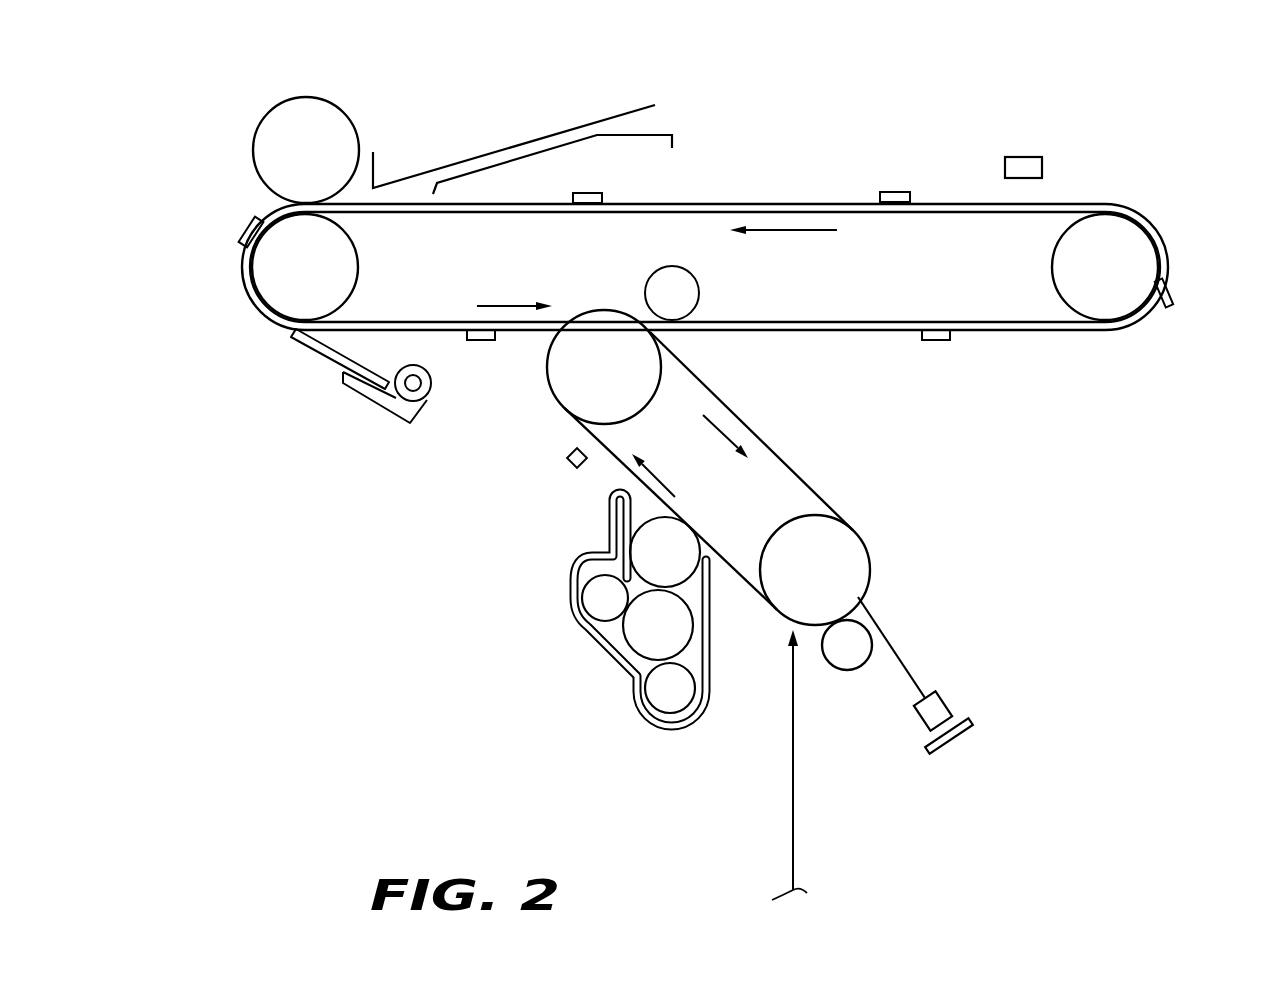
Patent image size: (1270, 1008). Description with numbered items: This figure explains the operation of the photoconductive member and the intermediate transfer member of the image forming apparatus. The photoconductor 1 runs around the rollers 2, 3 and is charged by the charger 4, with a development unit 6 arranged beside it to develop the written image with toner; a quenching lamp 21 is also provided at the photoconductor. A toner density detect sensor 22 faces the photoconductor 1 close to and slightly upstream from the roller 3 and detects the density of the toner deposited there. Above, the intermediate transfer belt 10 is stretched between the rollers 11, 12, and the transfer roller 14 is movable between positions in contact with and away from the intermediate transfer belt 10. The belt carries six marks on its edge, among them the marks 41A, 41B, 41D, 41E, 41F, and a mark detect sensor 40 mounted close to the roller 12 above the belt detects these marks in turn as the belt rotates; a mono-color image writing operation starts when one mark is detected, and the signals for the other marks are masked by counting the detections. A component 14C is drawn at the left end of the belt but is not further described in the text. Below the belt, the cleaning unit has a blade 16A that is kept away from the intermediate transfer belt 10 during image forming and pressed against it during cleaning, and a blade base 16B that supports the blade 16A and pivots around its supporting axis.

The photoconductor 1 is at (792, 470).
The roller 2 is at (858, 548).
The roller 3 is at (562, 390).
The charger 4 is at (847, 670).
The development unit 6 is at (584, 657).
The intermediate transfer belt 10 is at (417, 320).
The roller 11 is at (243, 286).
The roller 12 is at (1106, 312).
The transfer roller 14 is at (348, 113).
The sensor 14C is at (240, 231).
The blade 16A is at (317, 357).
The blade base 16B is at (397, 410).
The quenching lamp 21 is at (953, 702).
The toner density detect sensor 22 is at (572, 465).
The mark detect sensor 40 is at (1025, 155).
The mark 41A is at (897, 190).
The mark 41B is at (587, 193).
The mark 41D is at (478, 343).
The mark 41E is at (938, 342).
The mark 41F is at (1174, 300).